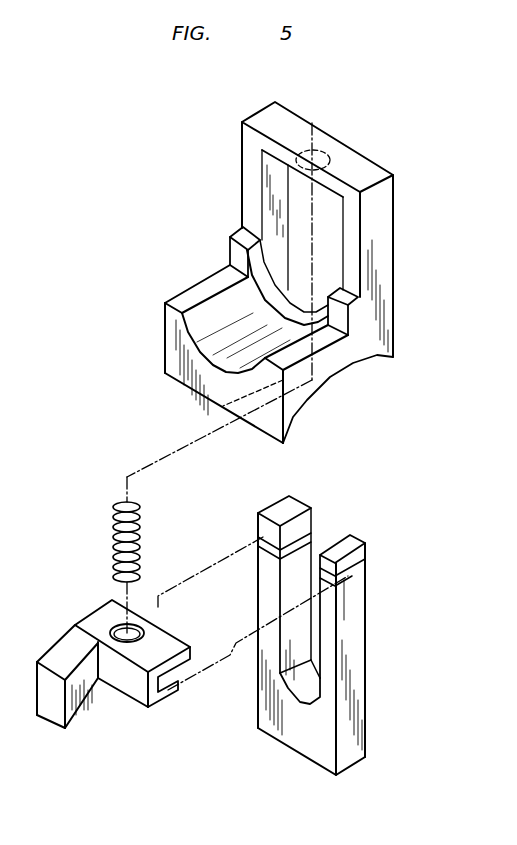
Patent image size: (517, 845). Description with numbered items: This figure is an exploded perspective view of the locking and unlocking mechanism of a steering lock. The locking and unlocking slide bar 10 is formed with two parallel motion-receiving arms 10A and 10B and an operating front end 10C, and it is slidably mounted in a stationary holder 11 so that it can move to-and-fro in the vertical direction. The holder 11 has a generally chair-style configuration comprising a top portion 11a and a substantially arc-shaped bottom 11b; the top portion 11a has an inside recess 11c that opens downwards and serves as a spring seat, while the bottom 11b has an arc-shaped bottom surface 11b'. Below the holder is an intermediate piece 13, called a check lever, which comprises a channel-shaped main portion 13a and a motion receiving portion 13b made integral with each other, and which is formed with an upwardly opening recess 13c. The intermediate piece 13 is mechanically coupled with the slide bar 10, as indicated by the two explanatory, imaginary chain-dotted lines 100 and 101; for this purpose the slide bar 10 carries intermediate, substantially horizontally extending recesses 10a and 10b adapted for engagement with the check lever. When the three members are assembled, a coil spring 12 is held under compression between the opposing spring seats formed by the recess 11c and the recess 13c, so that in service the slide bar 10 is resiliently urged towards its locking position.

The locking and unlocking slide bar 10 is at (315, 639).
The motion-receiving arm 10A is at (262, 580).
The motion-receiving arm 10B is at (358, 617).
The operating front end 10C is at (307, 747).
The recess 10a is at (308, 548).
The recess 10b is at (353, 568).
The stationary holder 11 is at (303, 271).
The top portion 11a is at (353, 158).
The arc-shaped bottom 11b is at (279, 335).
The arc-shaped bottom surface 11b' is at (338, 405).
The inside recess 11c is at (314, 149).
The coil spring 12 is at (115, 530).
The intermediate piece 13 is at (115, 682).
The channel-shaped main portion 13a is at (100, 610).
The motion receiving portion 13b is at (53, 717).
The upwardly opening recess 13c is at (140, 628).
The chain-dotted line 100 is at (220, 556).
The chain-dotted line 101 is at (197, 680).